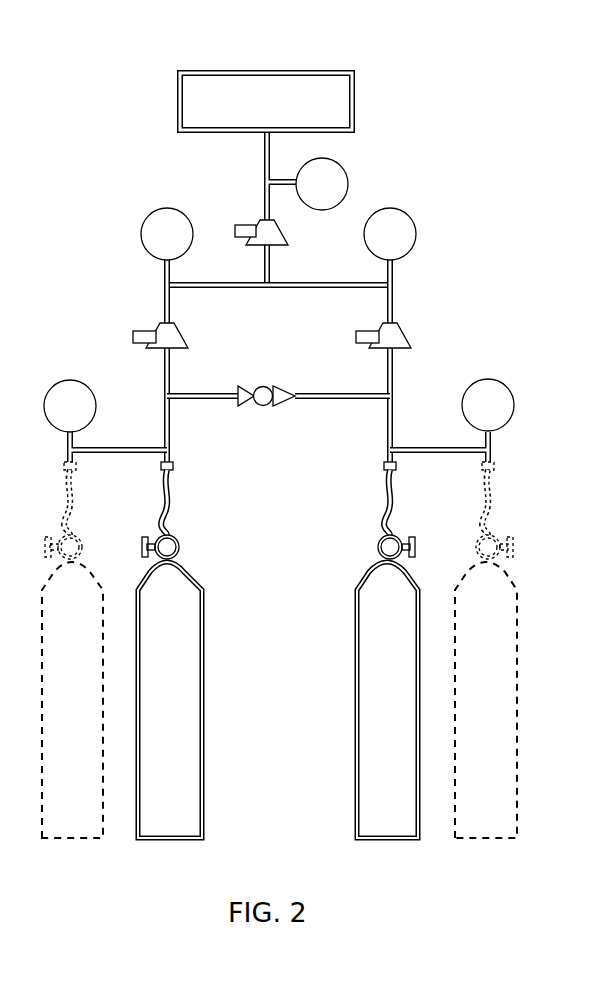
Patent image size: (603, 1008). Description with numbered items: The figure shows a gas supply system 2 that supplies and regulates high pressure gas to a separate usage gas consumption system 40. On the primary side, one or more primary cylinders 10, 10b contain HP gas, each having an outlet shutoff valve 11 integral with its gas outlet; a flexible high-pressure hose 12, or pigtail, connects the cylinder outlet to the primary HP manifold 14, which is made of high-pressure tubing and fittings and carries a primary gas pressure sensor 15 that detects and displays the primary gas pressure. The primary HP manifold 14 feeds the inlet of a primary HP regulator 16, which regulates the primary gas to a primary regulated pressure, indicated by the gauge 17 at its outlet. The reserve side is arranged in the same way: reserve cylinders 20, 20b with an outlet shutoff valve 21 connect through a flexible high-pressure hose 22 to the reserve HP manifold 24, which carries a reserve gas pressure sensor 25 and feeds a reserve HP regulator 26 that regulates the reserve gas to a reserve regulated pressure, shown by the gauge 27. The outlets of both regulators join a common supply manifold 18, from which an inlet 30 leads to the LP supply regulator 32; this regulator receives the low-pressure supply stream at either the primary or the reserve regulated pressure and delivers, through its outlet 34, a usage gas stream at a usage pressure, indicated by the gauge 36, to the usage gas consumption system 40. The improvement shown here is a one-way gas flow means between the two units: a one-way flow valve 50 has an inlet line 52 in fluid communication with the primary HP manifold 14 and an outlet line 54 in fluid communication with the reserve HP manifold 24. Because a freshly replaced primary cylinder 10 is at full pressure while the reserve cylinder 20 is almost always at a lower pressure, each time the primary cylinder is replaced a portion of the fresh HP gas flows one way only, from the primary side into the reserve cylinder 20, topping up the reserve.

The gas supply system 2 is at (503, 77).
The primary cylinder 10 is at (175, 618).
The primary cylinder 10b is at (97, 660).
The outlet shutoff valve 11 is at (165, 545).
The flexible high-pressure hose 12 is at (172, 510).
The primary HP manifold 14 is at (118, 448).
The primary gas pressure sensor 15 is at (68, 383).
The primary HP regulator 16 is at (172, 338).
The first pressure gauge 17 is at (165, 213).
The supply manifold 18 is at (282, 285).
The reserve cylinder 20 is at (378, 655).
The reserve cylinder 20b is at (515, 667).
The outlet shutoff valve 21 is at (385, 545).
The flexible high-pressure hose 22 is at (395, 502).
The reserve HP manifold 24 is at (408, 450).
The reserve gas pressure sensor 25 is at (498, 385).
The reserve HP regulator 26 is at (395, 338).
The second pressure gauge 27 is at (395, 213).
The inlet 30 is at (266, 272).
The LP supply regulator 32 is at (258, 220).
The outlet 34 is at (265, 163).
The third pressure gauge 36 is at (337, 170).
The usage gas consumption system 40 is at (292, 97).
The one-way flow valve 50 is at (290, 395).
The inlet line 52 is at (190, 394).
The outlet line 54 is at (363, 393).